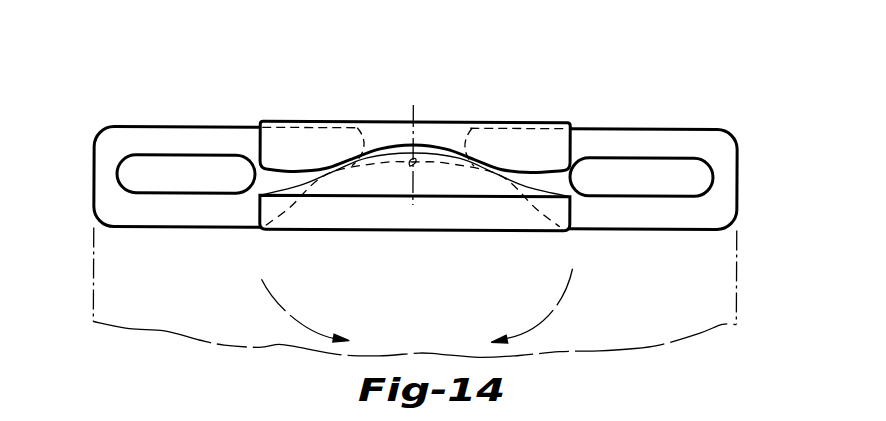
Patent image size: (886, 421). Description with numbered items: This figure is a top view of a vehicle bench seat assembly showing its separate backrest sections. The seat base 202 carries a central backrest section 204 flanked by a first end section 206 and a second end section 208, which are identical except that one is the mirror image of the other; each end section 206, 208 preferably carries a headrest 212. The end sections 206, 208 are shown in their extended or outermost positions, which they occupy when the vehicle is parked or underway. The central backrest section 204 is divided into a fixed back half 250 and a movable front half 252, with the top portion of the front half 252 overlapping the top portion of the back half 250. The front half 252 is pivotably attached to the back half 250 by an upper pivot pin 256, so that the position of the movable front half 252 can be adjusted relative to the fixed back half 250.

The seat base 202 is at (705, 298).
The central backrest section 204 is at (533, 147).
The first end section 206 is at (717, 210).
The second end section 208 is at (143, 143).
The headrest 212 is at (137, 175).
The fixed back half 250 is at (372, 137).
The movable front half 252 is at (555, 205).
The upper pivot pin 256 is at (416, 157).